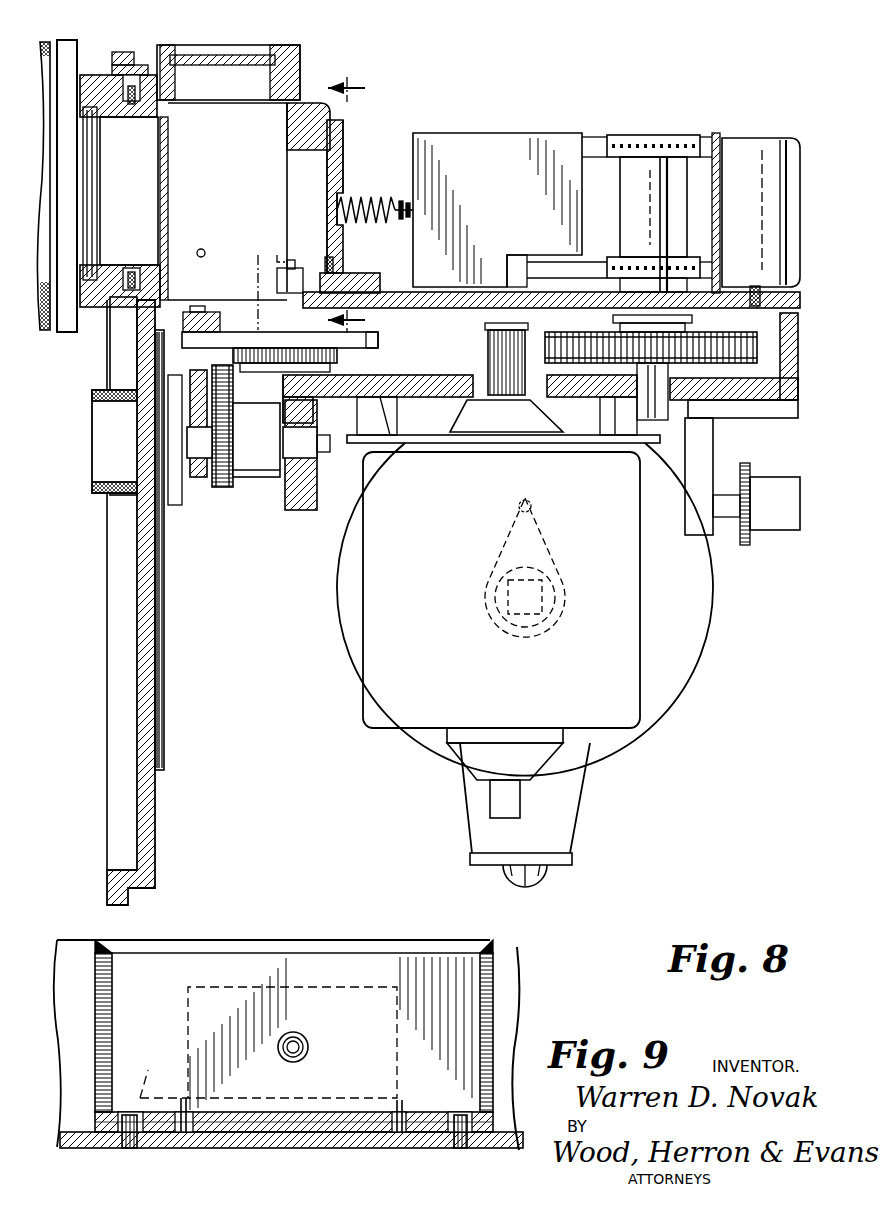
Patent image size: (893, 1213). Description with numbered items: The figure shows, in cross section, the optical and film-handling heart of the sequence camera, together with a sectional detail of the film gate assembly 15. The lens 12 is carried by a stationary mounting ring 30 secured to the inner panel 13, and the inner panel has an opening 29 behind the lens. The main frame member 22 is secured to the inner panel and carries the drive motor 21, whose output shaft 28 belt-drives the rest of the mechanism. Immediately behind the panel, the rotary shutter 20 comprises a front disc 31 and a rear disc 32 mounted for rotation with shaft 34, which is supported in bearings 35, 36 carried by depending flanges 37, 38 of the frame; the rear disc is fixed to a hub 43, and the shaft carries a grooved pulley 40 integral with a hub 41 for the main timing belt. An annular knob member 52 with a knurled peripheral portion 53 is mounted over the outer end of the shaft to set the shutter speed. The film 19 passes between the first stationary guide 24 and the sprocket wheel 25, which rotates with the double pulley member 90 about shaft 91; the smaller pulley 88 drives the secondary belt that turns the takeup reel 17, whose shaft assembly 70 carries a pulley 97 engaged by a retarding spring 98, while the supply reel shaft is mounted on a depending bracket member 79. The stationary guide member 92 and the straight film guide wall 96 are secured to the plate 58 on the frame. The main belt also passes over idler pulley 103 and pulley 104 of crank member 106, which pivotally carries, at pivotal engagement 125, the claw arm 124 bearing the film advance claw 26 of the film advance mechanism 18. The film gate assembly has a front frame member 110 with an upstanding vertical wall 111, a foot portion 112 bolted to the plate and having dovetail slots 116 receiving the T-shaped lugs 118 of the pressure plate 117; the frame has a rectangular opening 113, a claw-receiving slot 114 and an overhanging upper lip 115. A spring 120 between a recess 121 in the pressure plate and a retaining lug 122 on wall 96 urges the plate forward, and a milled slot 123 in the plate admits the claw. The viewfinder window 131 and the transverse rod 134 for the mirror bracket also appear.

In FIG. 8, the lens 12 is at (52, 33).
In FIG. 8, the inner panel 13 is at (137, 593).
In FIG. 8, the film gate assembly 15 is at (358, 128).
In FIG. 9, the film gate assembly 15 is at (306, 934).
In FIG. 8, the takeup reel 17 is at (692, 632).
In FIG. 8, the film advance mechanism 18 is at (238, 262).
In FIG. 8, the film 19 is at (327, 186).
In FIG. 8, the rotary shutter 20 is at (166, 553).
In FIG. 8, the drive motor 21 is at (501, 590).
In FIG. 8, the main frame member 22 is at (790, 350).
In FIG. 8, the first stationary guide 24 is at (594, 165).
In FIG. 8, the sprocket wheel 25 is at (652, 145).
In FIG. 8, the film advance claw 26 is at (277, 256).
In FIG. 8, the output shaft 28 is at (509, 398).
In FIG. 8, the opening 29 is at (143, 165).
In FIG. 8, the mounting ring 30 is at (137, 300).
In FIG. 8, the front disc 31 is at (155, 678).
In FIG. 8, the rear disc 32 is at (162, 675).
In FIG. 8, the shaft 34 is at (318, 455).
In FIG. 8, the bearing 35 is at (310, 480).
In FIG. 8, the bearing 36 is at (200, 441).
In FIG. 8, the depending flange 37 is at (305, 510).
In FIG. 8, the depending flange 38 is at (198, 480).
In FIG. 8, the grooved pulley 40 is at (243, 490).
In FIG. 8, the hub 41 is at (270, 480).
In FIG. 8, the hub 43 is at (182, 505).
In FIG. 8, the annular knob member 52 is at (97, 464).
In FIG. 8, the knurled peripheral portion 53 is at (95, 495).
In FIG. 8, the plate 58 is at (445, 306).
In FIG. 9, the plate 58 is at (420, 1150).
In FIG. 8, the shaft assembly 70 is at (548, 585).
In FIG. 8, the depending bracket member 79 is at (572, 808).
In FIG. 8, the smaller pulley 88 is at (693, 324).
In FIG. 8, the double pulley member 90 is at (768, 334).
In FIG. 8, the shaft 91 is at (660, 410).
In FIG. 8, the stationary guide member 92 is at (802, 201).
In FIG. 8, the film guide wall 96 is at (497, 210).
In FIG. 8, the pulley 97 is at (553, 622).
In FIG. 8, the retarding spring 98 is at (548, 540).
In FIG. 8, the idler pulley 103 is at (235, 391).
In FIG. 8, the pulley 104 is at (340, 360).
In FIG. 8, the crank member 106 is at (380, 341).
In FIG. 8, the front frame member 110 is at (286, 150).
In FIG. 9, the front frame member 110 is at (373, 945).
In FIG. 8, the upstanding vertical wall 111 is at (290, 126).
In FIG. 9, the upstanding vertical wall 111 is at (495, 970).
In FIG. 8, the foot portion 112 is at (370, 291).
In FIG. 9, the foot portion 112 is at (336, 1150).
In FIG. 8, the rectangular opening 113 is at (298, 200).
In FIG. 9, the rectangular opening 113 is at (405, 997).
In FIG. 8, the claw-receiving slot 114 is at (298, 298).
In FIG. 9, the claw-receiving slot 114 is at (268, 1042).
In FIG. 8, the upper lip 115 is at (345, 140).
In FIG. 9, the upper lip 115 is at (110, 966).
In FIG. 9, the dovetail slots 116 is at (378, 1108).
In FIG. 8, the pressure plate 117 is at (345, 162).
In FIG. 9, the pressure plate 117 is at (330, 973).
In FIG. 9, the T-shaped lugs 118 is at (180, 1150).
In FIG. 8, the spring 120 is at (352, 200).
In FIG. 9, the spring 120 is at (308, 1050).
In FIG. 8, the recess 121 is at (344, 222).
In FIG. 9, the recess 121 is at (305, 1042).
In FIG. 8, the retaining lug 122 is at (405, 212).
In FIG. 8, the milled slot 123 is at (325, 262).
In FIG. 8, the claw arm 124 is at (220, 322).
In FIG. 8, the pivotal engagement 125 is at (198, 308).
In FIG. 8, the viewfinder window 131 is at (232, 58).
In FIG. 8, the transverse rod 134 is at (203, 249).